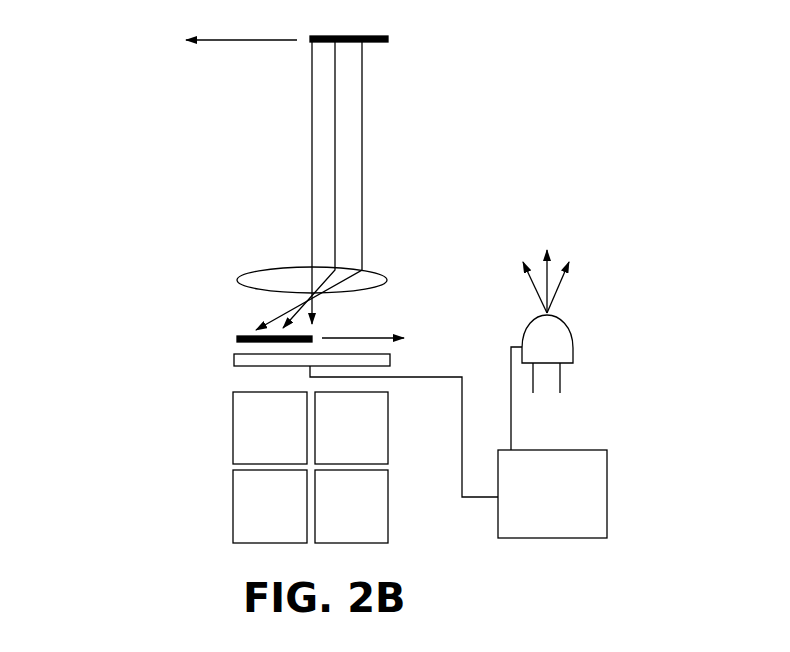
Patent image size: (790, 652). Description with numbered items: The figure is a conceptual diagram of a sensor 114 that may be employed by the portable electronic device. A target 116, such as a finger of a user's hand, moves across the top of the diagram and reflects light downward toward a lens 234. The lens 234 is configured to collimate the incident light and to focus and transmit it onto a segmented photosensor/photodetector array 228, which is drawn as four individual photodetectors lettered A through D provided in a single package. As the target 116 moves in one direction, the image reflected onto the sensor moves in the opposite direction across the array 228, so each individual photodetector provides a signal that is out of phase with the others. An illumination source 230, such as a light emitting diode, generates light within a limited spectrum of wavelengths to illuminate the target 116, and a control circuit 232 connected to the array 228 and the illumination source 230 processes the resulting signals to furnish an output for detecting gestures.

The sensor 114 is at (143, 194).
The target 116 is at (335, 35).
The lens 234 is at (387, 279).
The photosensor/photodetector array 228 is at (240, 524).
The illumination source 230 is at (575, 338).
The control circuit 232 is at (608, 466).